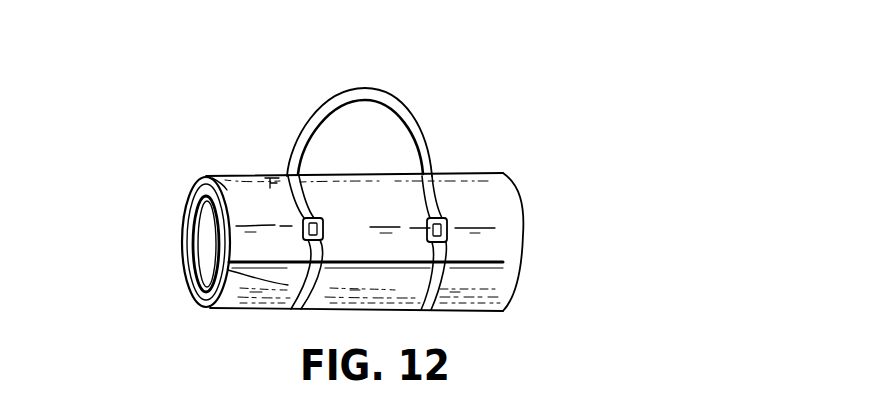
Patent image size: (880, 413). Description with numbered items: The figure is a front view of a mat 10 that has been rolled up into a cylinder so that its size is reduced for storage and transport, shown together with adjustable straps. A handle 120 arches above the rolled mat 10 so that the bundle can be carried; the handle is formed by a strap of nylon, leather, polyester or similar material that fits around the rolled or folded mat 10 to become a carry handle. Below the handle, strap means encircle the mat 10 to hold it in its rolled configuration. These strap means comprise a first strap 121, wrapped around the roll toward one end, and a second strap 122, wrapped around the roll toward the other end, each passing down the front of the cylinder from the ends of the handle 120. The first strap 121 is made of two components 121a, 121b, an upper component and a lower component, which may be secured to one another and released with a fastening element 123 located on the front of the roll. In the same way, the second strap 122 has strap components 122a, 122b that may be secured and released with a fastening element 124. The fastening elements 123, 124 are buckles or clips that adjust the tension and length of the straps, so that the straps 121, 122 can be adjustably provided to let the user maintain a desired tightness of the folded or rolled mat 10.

The mat 10 is at (476, 188).
The handle 120 is at (373, 98).
The first strap 121 is at (211, 242).
The first strap component 121a is at (300, 212).
The first strap component 121b is at (290, 257).
The second strap 122 is at (520, 243).
The second strap component 122a is at (440, 209).
The second strap component 122b is at (448, 248).
The fastening element 123 is at (302, 226).
The fastening element 124 is at (449, 231).